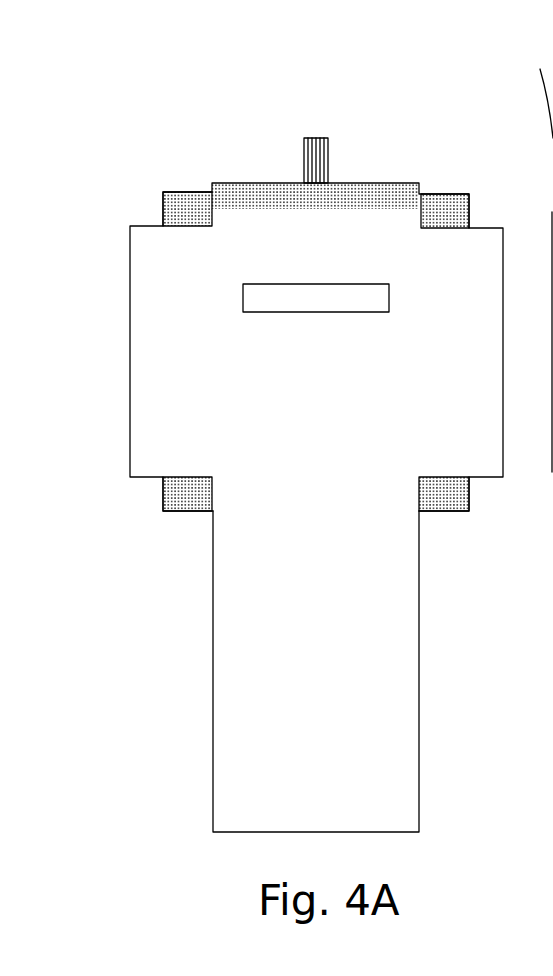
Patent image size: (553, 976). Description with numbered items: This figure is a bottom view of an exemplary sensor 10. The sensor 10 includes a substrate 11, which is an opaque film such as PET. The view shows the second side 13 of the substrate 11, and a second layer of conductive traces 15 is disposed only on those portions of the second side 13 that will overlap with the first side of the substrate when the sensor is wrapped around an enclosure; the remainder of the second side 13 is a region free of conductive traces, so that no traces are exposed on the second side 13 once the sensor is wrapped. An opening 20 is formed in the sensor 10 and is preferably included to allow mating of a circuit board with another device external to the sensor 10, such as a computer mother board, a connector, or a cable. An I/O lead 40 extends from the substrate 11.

The sensor 10 is at (486, 146).
The substrate 11 is at (391, 590).
The second side 13 is at (148, 391).
The second layer of conductive traces 15 is at (182, 207).
The opening 20 is at (310, 300).
The I/O lead 40 is at (319, 156).